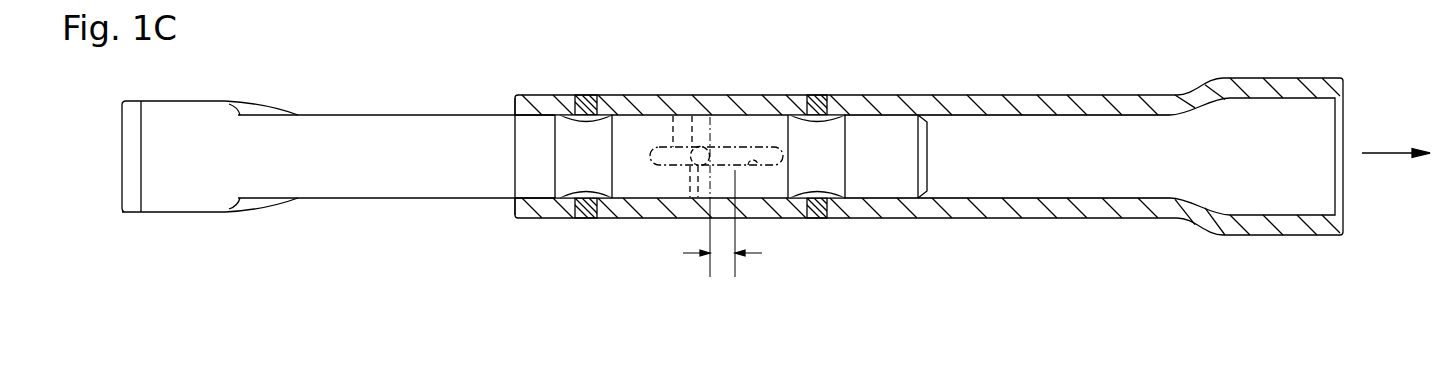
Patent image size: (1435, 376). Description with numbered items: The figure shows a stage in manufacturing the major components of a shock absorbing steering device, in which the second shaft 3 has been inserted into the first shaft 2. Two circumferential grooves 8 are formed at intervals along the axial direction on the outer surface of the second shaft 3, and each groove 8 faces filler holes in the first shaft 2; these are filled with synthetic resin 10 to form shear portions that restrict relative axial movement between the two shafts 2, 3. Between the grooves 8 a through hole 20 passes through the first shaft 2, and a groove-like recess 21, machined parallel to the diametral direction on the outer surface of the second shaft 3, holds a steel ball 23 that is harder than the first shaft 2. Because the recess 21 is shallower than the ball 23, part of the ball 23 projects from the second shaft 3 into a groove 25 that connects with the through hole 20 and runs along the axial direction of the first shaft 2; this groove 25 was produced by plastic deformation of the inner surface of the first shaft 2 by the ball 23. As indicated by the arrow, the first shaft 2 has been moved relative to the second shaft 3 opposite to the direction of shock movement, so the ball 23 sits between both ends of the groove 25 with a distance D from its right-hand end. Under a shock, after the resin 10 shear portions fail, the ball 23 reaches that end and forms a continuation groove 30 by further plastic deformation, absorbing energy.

The first shaft 2 is at (1083, 102).
The second shaft 3 is at (388, 138).
The circumferential groove 8 is at (568, 153).
The synthetic resin 10 is at (590, 95).
The through hole 20 is at (673, 116).
The recess 21 is at (688, 197).
The ball 23 is at (704, 146).
The groove 25 is at (735, 146).
The continuation groove 30 is at (757, 168).
The distance D is at (722, 213).